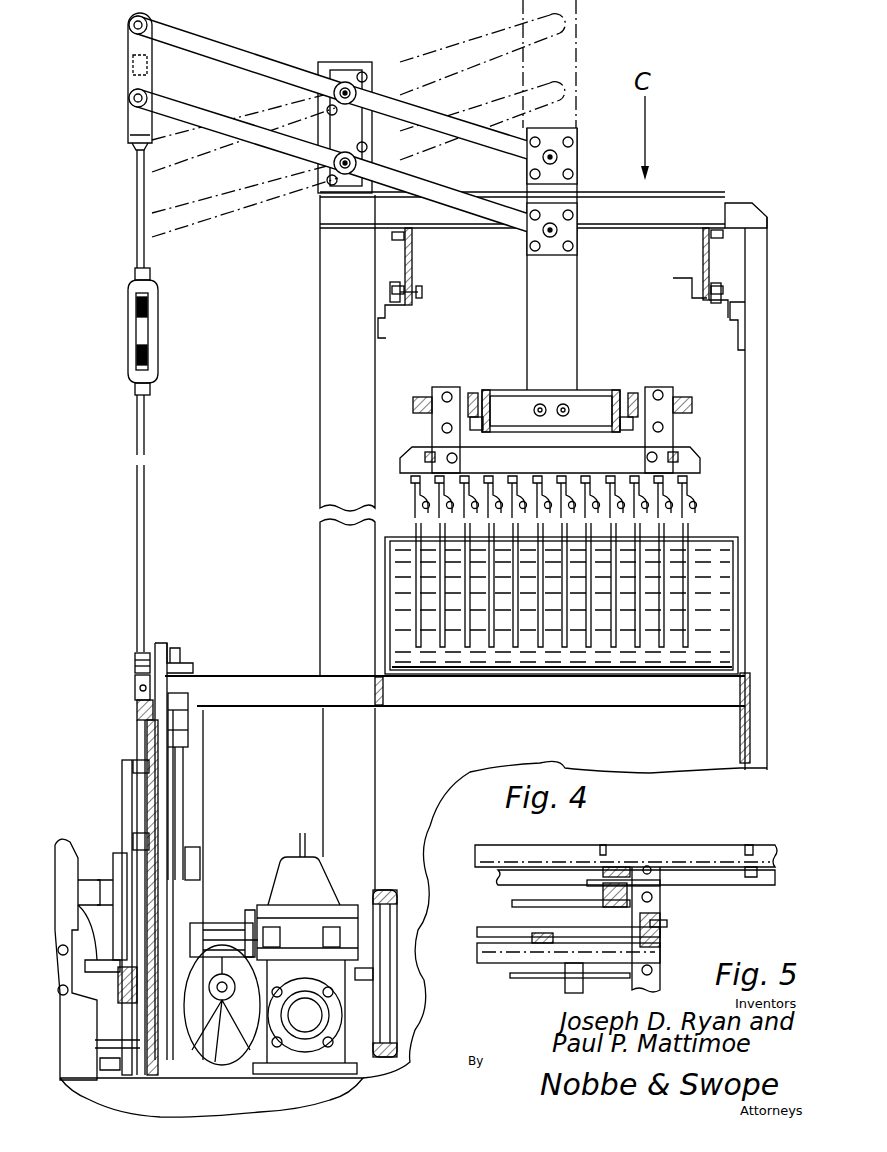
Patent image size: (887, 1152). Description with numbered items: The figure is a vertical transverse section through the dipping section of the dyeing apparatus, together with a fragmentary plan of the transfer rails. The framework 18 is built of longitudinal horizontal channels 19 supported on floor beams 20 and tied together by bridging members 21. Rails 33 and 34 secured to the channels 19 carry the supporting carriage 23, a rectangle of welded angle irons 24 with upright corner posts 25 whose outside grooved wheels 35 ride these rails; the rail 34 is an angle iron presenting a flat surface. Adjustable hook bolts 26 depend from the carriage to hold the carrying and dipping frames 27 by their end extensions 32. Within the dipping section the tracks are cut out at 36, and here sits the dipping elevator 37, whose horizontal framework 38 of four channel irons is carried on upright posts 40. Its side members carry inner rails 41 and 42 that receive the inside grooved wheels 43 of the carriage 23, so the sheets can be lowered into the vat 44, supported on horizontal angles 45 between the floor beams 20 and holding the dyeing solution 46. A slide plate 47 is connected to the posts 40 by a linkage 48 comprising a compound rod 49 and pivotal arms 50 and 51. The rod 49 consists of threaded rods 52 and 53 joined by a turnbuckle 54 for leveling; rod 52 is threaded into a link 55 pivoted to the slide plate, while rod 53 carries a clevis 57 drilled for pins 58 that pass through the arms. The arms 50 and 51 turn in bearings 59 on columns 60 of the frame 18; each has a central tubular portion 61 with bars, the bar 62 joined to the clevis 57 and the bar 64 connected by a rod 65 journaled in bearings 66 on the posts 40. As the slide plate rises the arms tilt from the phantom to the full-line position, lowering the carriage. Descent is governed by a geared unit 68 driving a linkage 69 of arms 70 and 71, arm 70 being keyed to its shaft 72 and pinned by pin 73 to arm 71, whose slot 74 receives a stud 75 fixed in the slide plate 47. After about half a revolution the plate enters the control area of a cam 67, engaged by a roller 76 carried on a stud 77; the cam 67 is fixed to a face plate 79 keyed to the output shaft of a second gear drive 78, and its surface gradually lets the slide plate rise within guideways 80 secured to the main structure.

In FIG. 4, the framework 18 is at (684, 205).
In FIG. 4, the horizontal channels 19 is at (413, 258).
In FIG. 5, the horizontal channels 19 is at (690, 852).
In FIG. 4, the floor beams 20 is at (752, 350).
In FIG. 4, the bridging members 21 is at (745, 215).
In FIG. 4, the supporting carriage 23 is at (663, 388).
In FIG. 5, the supporting carriage 23 is at (658, 983).
In FIG. 4, the angle irons 24 is at (700, 458).
In FIG. 5, the angle irons 24 is at (661, 900).
In FIG. 4, the corner posts 25 is at (446, 440).
In FIG. 5, the corner posts 25 is at (668, 923).
In FIG. 4, the hook bolts 26 is at (413, 484).
In FIG. 4, the carrying and dipping frames 27 is at (416, 514).
In FIG. 5, the carrying and dipping frames 27 is at (555, 905).
In FIG. 4, the end extensions 32 is at (692, 500).
In FIG. 4, the rail 33 is at (420, 292).
In FIG. 5, the rail 33 is at (708, 886).
In FIG. 4, the rail 34 is at (686, 282).
In FIG. 4, the grooved wheels 35 is at (420, 396).
In FIG. 5, the grooved wheels 35 is at (622, 866).
In FIG. 5, the cut-out 36 is at (582, 872).
In FIG. 4, the dipping elevator 37 is at (513, 382).
In FIG. 5, the dipping elevator 37 is at (484, 953).
In FIG. 4, the horizontal framework 38 is at (590, 395).
In FIG. 5, the horizontal framework 38 is at (505, 958).
In FIG. 4, the posts 40 is at (556, 326).
In FIG. 4, the rail 41 is at (481, 433).
In FIG. 5, the rail 41 is at (494, 929).
In FIG. 4, the rail 42 is at (631, 433).
In FIG. 4, the grooved wheels 43 is at (472, 393).
In FIG. 5, the grooved wheels 43 is at (657, 940).
In FIG. 4, the vat 44 is at (386, 597).
In FIG. 4, the horizontal angles 45 is at (384, 684).
In FIG. 4, the dyeing solution 46 is at (410, 550).
In FIG. 4, the slide plate 47 is at (150, 755).
In FIG. 4, the linkage 48 is at (252, 222).
In FIG. 4, the compound rod 49 is at (166, 380).
In FIG. 4, the pivotal arm 50 is at (212, 120).
In FIG. 4, the pivotal arm 51 is at (272, 64).
In FIG. 4, the threaded rod 52 is at (146, 504).
In FIG. 4, the threaded rod 53 is at (146, 256).
In FIG. 4, the turnbuckle 54 is at (130, 350).
In FIG. 4, the link 55 is at (134, 688).
In FIG. 4, the clevis 57 is at (130, 80).
In FIG. 4, the pins 58 is at (129, 30).
In FIG. 4, the bearings 59 is at (362, 72).
In FIG. 4, the columns 60 is at (338, 297).
In FIG. 4, the tubular portion 61 is at (334, 92).
In FIG. 4, the bar 62 is at (236, 52).
In FIG. 4, the bar 64 is at (440, 115).
In FIG. 4, the rod 65 is at (560, 152).
In FIG. 4, the bearings 66 is at (578, 165).
In FIG. 4, the cam 67 is at (122, 803).
In FIG. 4, the geared unit 68 is at (298, 865).
In FIG. 4, the linkage 69 is at (210, 858).
In FIG. 4, the arm 70 is at (192, 897).
In FIG. 4, the arm 71 is at (180, 792).
In FIG. 4, the shaft 72 is at (232, 918).
In FIG. 4, the pin 73 is at (196, 846).
In FIG. 4, the slot 74 is at (182, 815).
In FIG. 4, the stud 75 is at (190, 733).
In FIG. 4, the roller 76 is at (132, 1004).
In FIG. 4, the stud 77 is at (122, 992).
In FIG. 4, the gear drive 78 is at (66, 882).
In FIG. 4, the face plate 79 is at (115, 885).
In FIG. 4, the guideways 80 is at (140, 786).